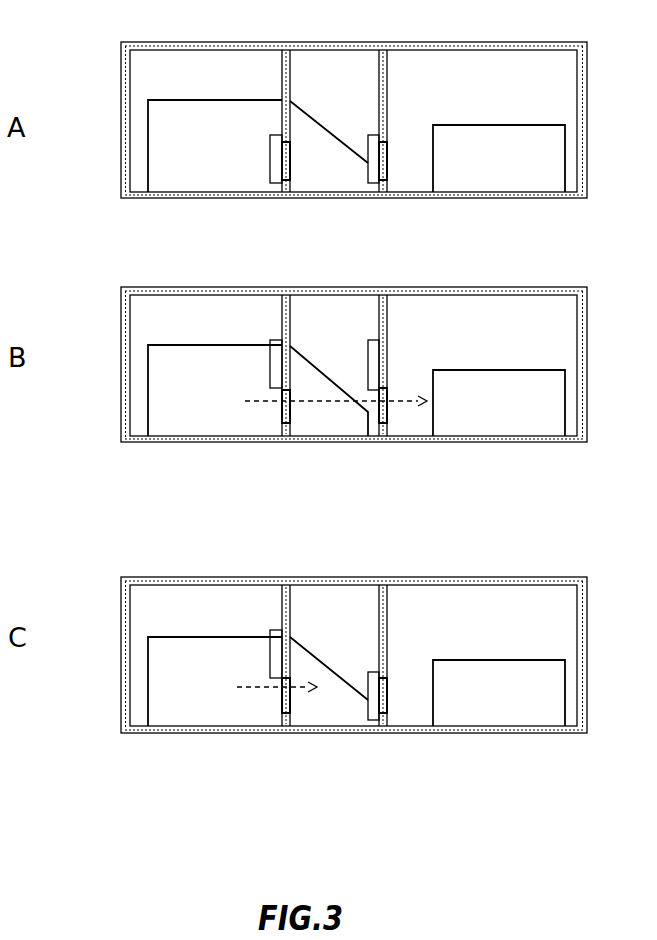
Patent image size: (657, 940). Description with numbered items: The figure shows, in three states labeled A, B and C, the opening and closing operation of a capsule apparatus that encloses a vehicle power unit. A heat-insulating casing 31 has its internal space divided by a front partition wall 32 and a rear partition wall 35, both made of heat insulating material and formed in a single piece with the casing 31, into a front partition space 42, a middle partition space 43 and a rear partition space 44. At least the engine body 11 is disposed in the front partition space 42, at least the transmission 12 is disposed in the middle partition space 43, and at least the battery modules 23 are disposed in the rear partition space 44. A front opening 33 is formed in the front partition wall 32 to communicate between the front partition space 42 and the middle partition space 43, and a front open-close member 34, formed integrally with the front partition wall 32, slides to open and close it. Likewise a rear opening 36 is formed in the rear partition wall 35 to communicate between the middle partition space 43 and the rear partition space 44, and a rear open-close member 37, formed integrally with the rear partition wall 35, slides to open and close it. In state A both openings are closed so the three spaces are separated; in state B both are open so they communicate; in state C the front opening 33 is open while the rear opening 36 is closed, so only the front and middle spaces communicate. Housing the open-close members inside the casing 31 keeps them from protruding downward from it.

The engine body 11 is at (215, 105).
The transmission 12 is at (321, 128).
The battery modules 23 is at (518, 138).
The casing 31 is at (502, 41).
The front partition wall 32 is at (283, 53).
The front opening 33 is at (292, 163).
The front open-close member 34 is at (273, 160).
The rear partition wall 35 is at (382, 55).
The rear opening 36 is at (386, 162).
The rear open-close member 37 is at (367, 152).
The front partition space 42 is at (161, 58).
The middle partition space 43 is at (338, 58).
The rear partition space 44 is at (447, 58).